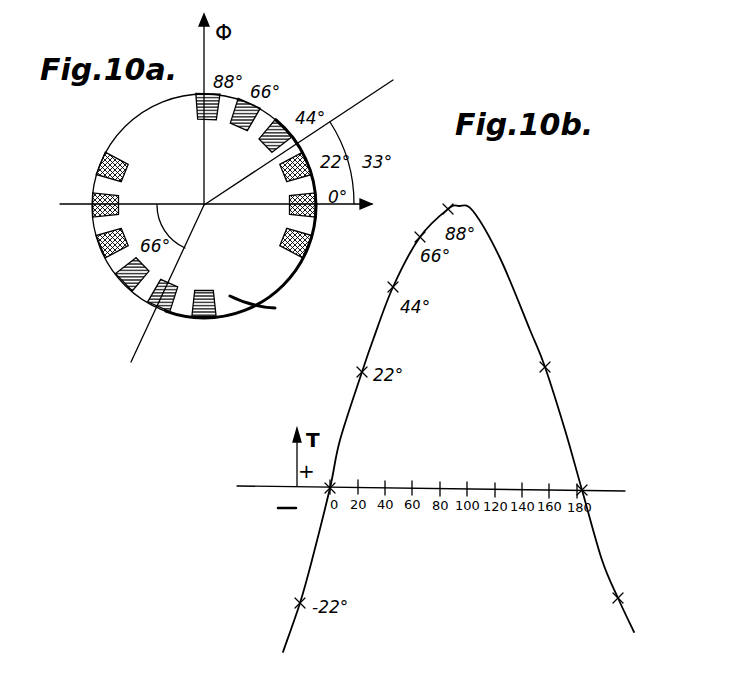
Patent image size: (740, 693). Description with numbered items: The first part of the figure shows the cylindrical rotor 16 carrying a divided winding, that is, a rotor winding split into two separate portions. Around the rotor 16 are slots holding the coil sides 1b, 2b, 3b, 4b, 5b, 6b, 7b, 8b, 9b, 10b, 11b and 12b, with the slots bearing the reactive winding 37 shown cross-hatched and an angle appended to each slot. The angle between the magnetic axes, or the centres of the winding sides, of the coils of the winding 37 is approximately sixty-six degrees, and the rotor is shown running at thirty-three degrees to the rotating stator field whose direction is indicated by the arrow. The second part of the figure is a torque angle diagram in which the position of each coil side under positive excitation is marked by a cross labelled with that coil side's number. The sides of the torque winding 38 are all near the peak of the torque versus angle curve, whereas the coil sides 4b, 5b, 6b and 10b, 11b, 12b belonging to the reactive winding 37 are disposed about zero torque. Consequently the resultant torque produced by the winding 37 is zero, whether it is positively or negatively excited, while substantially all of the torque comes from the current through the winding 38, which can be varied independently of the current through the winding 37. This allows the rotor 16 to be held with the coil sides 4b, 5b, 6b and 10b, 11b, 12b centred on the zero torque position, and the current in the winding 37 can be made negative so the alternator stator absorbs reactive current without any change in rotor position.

In FIG. 10A, the coil side 1b is at (198, 318).
In FIG. 10A, the coil side 2b is at (161, 310).
In FIG. 10A, the coil side 3b is at (128, 283).
In FIG. 10A, the coil side 4b is at (107, 251).
In FIG. 10B, the coil side 4b is at (612, 598).
In FIG. 10A, the coil side 5b is at (96, 208).
In FIG. 10B, the coil side 5b is at (584, 486).
In FIG. 10A, the coil side 6b is at (103, 165).
In FIG. 10B, the coil side 6b is at (549, 368).
In FIG. 10A, the coil side 7b is at (202, 111).
In FIG. 10B, the coil side 7b is at (455, 200).
In FIG. 10A, the coil side 8b is at (252, 106).
In FIG. 10B, the coil side 8b is at (416, 237).
In FIG. 10A, the coil side 9b is at (288, 124).
In FIG. 10B, the coil side 9b is at (383, 284).
In FIG. 10A, the coil side 10b is at (325, 148).
In FIG. 10B, the coil side 10b is at (346, 375).
In FIG. 10A, the coil side 11b is at (316, 209).
In FIG. 10B, the coil side 11b is at (332, 486).
In FIG. 10A, the coil side 12b is at (303, 251).
In FIG. 10B, the coil side 12b is at (298, 604).
In FIG. 10A, the cylindrical rotor 16 is at (249, 299).
In FIG. 10A, the reactive winding 37 is at (312, 156).
In FIG. 10A, the torque winding 38 is at (234, 114).